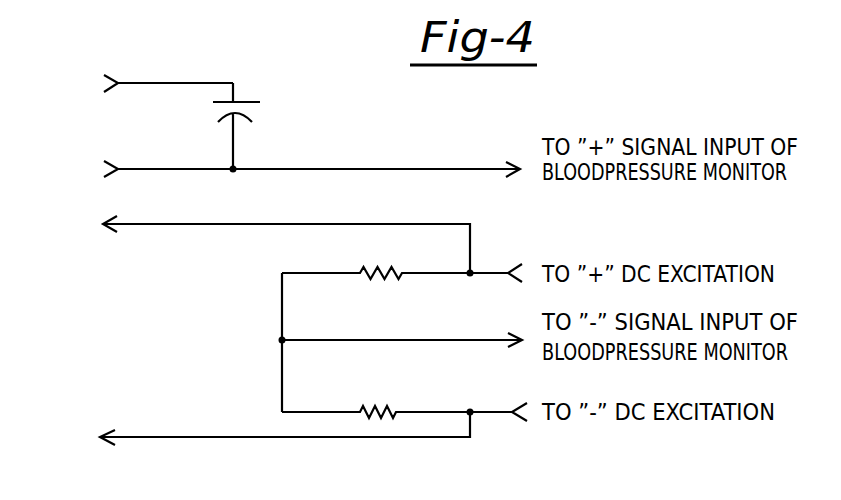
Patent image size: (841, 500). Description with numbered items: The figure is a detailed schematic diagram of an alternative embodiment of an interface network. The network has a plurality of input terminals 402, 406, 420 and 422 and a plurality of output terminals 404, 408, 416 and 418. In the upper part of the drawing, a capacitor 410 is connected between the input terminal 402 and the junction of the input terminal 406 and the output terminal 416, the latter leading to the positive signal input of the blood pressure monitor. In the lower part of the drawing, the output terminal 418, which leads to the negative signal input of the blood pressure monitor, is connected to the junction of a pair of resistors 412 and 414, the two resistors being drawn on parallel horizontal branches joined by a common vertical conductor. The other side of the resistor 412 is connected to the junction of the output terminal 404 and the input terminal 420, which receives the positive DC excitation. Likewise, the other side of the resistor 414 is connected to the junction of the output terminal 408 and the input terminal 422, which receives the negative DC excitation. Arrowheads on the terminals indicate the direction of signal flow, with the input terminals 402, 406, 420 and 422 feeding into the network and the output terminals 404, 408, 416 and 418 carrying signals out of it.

The input terminal 402 is at (112, 78).
The output terminal 404 is at (110, 230).
The input terminal 406 is at (110, 160).
The output terminal 408 is at (105, 432).
The capacitor 410 is at (253, 108).
The resistor 412 is at (380, 267).
The resistor 414 is at (395, 370).
The output terminal 416 is at (517, 160).
The output terminal 418 is at (522, 333).
The input terminal 420 is at (517, 263).
The input terminal 422 is at (512, 420).